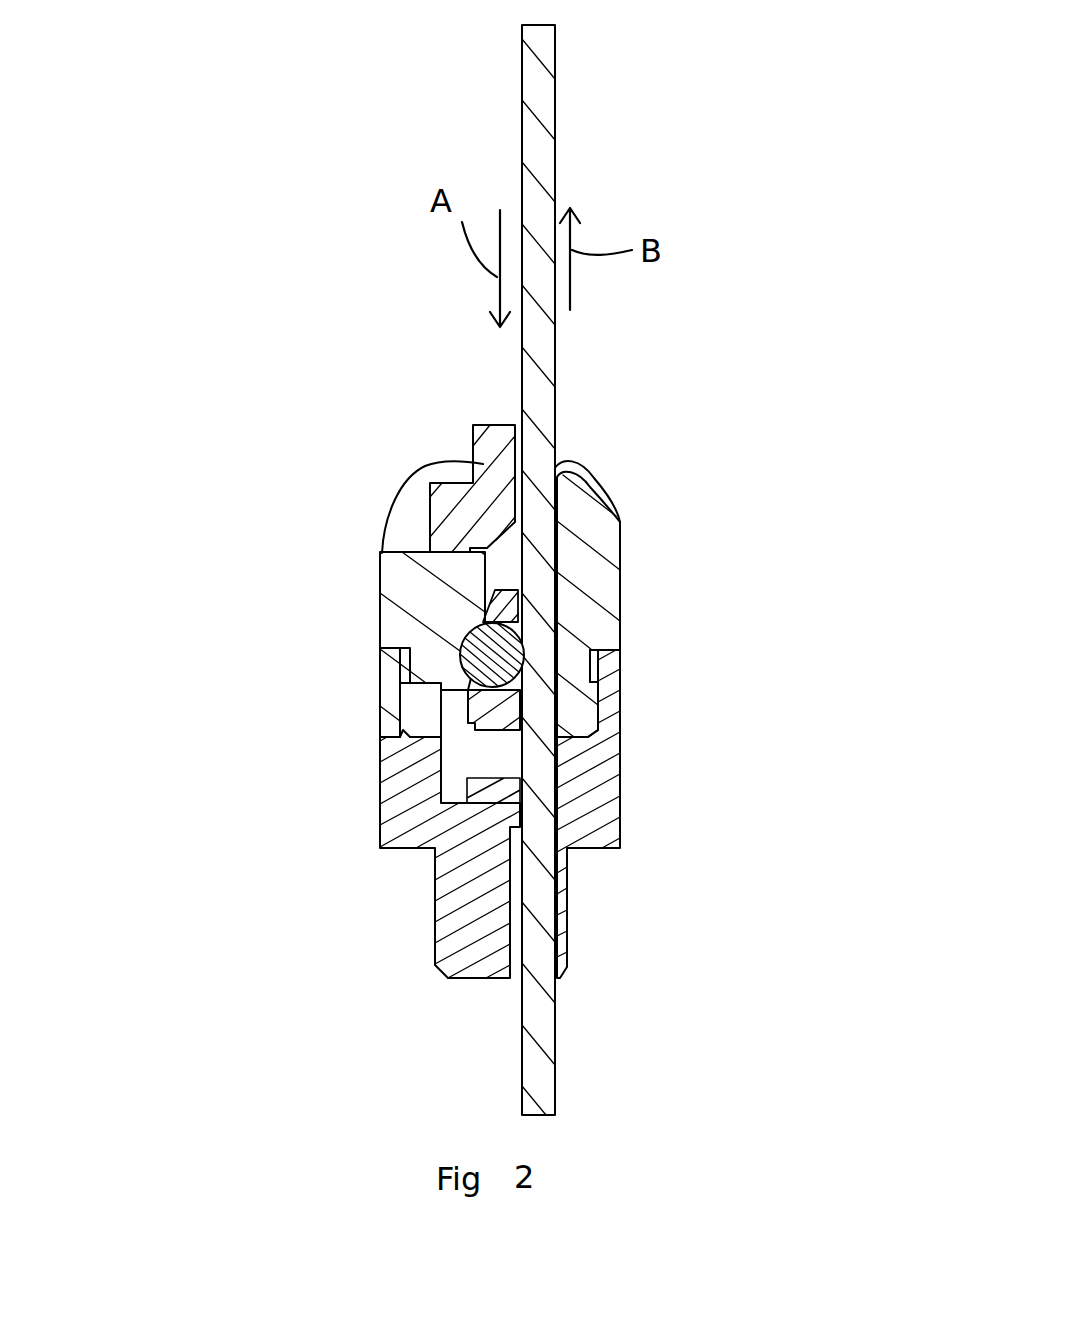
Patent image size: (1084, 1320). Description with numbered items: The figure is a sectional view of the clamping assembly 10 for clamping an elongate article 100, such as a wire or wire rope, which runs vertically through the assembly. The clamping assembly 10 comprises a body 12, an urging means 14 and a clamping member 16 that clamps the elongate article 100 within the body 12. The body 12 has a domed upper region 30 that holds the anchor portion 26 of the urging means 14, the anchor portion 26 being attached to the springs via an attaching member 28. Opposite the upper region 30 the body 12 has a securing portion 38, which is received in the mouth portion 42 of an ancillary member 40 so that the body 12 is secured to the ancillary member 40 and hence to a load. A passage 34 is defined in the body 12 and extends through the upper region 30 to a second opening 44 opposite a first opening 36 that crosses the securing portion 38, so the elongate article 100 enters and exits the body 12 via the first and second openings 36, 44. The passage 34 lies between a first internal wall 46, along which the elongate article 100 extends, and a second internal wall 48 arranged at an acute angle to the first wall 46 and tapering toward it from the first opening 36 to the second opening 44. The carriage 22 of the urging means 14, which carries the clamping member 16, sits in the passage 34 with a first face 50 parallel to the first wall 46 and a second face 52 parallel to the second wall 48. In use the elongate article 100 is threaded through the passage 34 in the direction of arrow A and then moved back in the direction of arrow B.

The clamping assembly 10 is at (390, 440).
The body 12 is at (634, 594).
The urging means 14 is at (499, 733).
The clamping member 16 is at (475, 641).
The carriage 22 is at (519, 624).
The anchor portion 26 is at (430, 518).
The attaching member 28 is at (470, 465).
The domed upper region 30 is at (587, 478).
The passage 34 is at (497, 582).
The first opening 36 is at (481, 552).
The securing portion 38 is at (523, 706).
The ancillary member 40 is at (361, 817).
The mouth portion 42 is at (408, 671).
The second opening 44 is at (513, 447).
The first internal wall 46 is at (548, 598).
The second internal wall 48 is at (493, 582).
The first face 50 is at (560, 708).
The second face 52 is at (502, 620).
The elongate article 100 is at (556, 185).